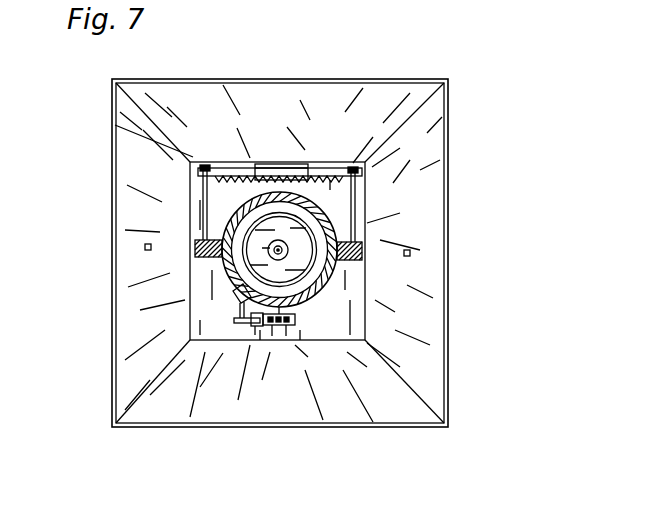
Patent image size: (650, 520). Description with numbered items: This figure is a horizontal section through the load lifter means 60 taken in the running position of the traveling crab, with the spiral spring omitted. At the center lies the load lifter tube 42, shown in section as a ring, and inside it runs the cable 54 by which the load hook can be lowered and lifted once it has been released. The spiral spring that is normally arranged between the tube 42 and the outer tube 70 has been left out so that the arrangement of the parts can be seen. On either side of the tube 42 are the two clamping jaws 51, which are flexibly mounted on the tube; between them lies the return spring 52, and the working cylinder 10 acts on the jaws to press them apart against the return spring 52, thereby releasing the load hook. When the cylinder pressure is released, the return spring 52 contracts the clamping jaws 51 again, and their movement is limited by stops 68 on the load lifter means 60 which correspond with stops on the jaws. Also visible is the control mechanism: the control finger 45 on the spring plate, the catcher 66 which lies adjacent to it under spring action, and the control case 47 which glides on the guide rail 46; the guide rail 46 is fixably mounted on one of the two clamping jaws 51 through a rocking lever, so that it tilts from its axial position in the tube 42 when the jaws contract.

The working cylinder 10 is at (306, 166).
The load lifter tube 42 is at (327, 233).
The control finger 45 is at (237, 305).
The guide rail 46 is at (279, 326).
The control case 47 is at (262, 327).
The clamping jaws 51 is at (194, 257).
The return spring 52 is at (238, 182).
The cable 54 is at (285, 254).
The load lifter means 60 is at (345, 400).
The catcher 66 is at (243, 326).
The stops 68 is at (145, 249).
The tube 70 is at (340, 205).